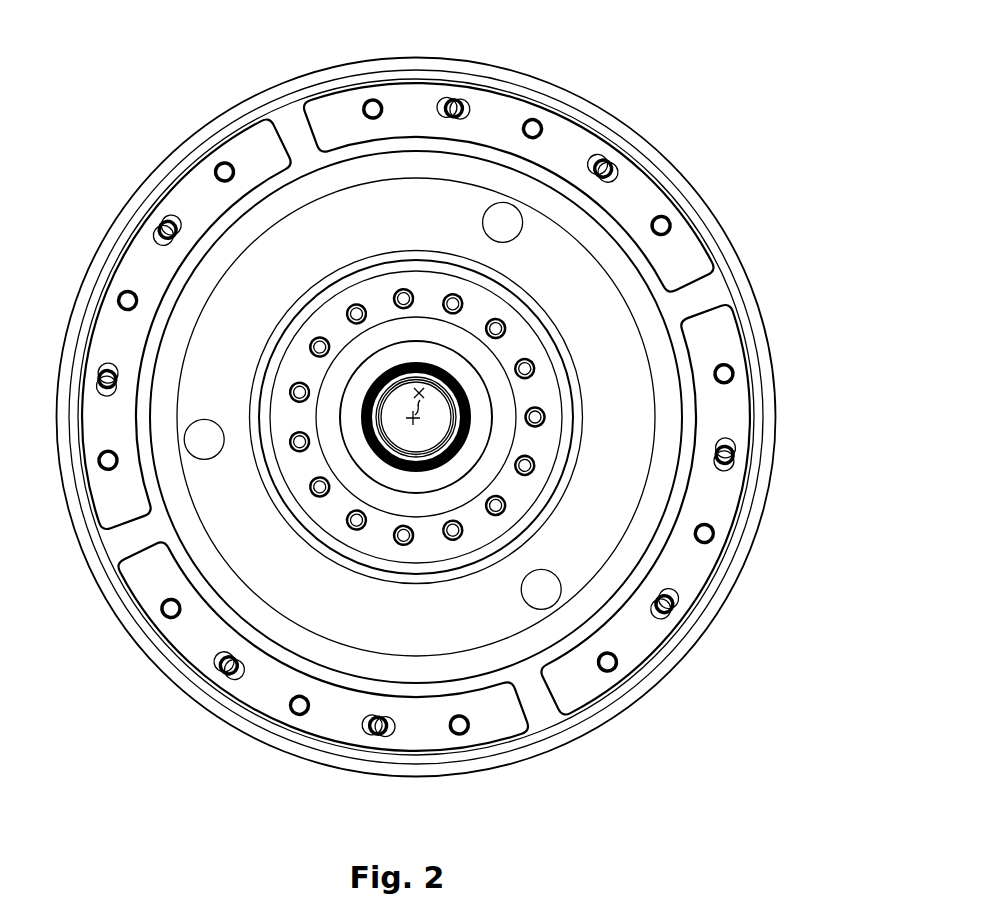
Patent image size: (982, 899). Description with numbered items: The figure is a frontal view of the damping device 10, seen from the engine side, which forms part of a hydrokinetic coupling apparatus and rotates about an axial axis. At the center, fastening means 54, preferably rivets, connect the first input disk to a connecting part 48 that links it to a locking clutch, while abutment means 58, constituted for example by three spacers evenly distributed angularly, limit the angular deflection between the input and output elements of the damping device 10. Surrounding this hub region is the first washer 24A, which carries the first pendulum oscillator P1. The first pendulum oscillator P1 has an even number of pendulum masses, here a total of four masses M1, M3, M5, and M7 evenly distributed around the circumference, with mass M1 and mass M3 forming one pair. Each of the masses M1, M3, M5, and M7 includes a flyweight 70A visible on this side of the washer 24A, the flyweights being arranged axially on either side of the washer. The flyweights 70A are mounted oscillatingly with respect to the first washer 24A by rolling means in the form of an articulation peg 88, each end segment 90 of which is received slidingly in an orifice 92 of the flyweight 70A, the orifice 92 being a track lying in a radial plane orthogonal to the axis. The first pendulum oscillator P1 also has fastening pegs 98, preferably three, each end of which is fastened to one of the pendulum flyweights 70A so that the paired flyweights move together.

The damping device 10 is at (739, 174).
The first washer 24A is at (720, 288).
The connecting part 48 is at (688, 423).
The fastening means 54 is at (348, 522).
The abutment means 58 is at (403, 546).
The flyweight 70A is at (500, 118).
The articulation peg 88 is at (738, 472).
The end segment 90 is at (736, 452).
The orifice 92 is at (738, 466).
The fastening peg 98 is at (728, 362).
The first pendulum oscillator P1 is at (690, 168).
The pendulum mass M1 is at (565, 146).
The pendulum mass M3 is at (268, 685).
The pendulum mass M5 is at (695, 571).
The pendulum mass M7 is at (133, 265).